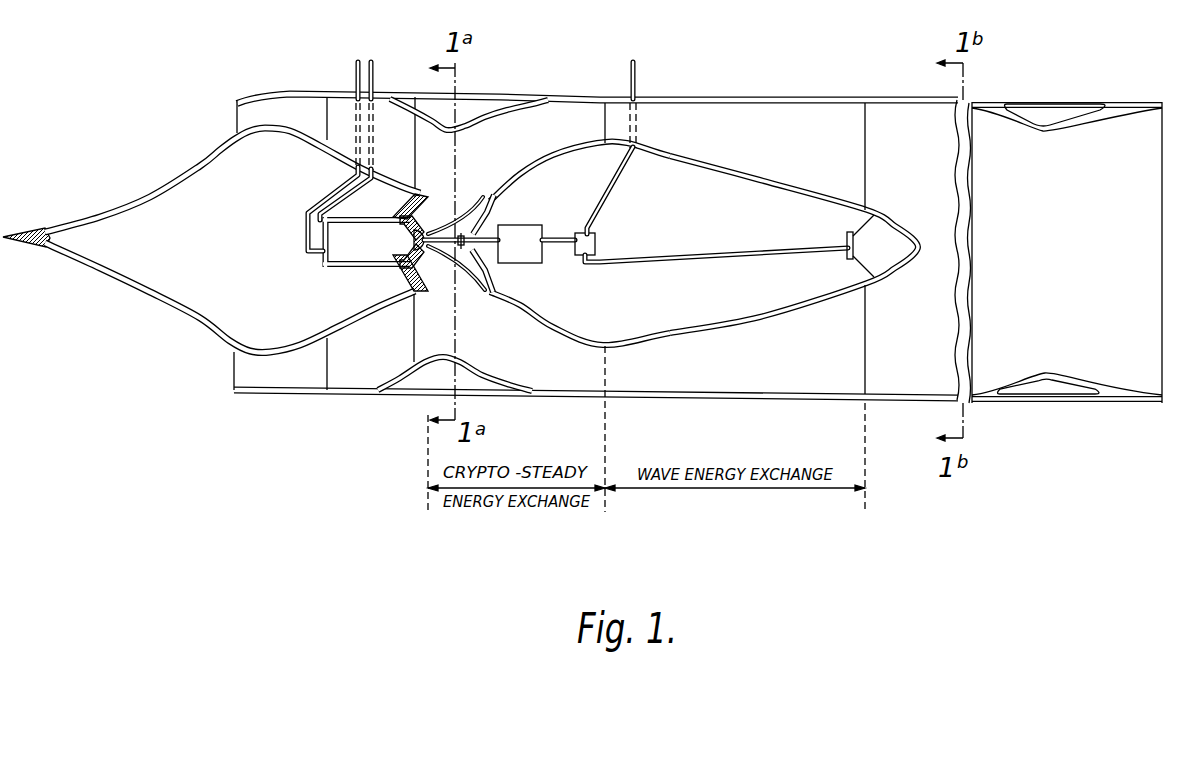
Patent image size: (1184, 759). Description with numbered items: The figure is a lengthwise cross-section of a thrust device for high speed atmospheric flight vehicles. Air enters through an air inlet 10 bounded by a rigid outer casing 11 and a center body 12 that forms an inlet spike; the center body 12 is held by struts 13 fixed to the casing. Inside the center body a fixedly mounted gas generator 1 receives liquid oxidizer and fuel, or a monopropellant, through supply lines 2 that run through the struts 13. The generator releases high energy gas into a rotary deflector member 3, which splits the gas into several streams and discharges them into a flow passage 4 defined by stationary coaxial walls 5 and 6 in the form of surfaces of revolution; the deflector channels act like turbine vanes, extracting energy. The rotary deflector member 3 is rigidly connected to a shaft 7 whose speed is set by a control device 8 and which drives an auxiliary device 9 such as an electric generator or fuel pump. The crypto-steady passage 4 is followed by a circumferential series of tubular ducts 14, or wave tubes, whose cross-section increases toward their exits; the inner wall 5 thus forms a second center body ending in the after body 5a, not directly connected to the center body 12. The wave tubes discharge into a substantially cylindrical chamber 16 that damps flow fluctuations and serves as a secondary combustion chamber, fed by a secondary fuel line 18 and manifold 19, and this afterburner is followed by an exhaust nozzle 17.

The gas generator 1 is at (353, 265).
The supply lines 2 is at (368, 77).
The rotary deflector member 3 is at (466, 292).
The flow passage 4 is at (534, 128).
The inner wall 5 is at (578, 141).
The after body 5a is at (795, 187).
The outer wall 6 is at (497, 102).
The shaft 7 is at (447, 290).
The control device 8 is at (533, 262).
The auxiliary device 9 is at (580, 256).
The air inlet 10 is at (248, 380).
The outer casing 11 is at (400, 393).
The center body 12 is at (175, 310).
The struts 13 is at (340, 372).
The tubular ducts 14 is at (712, 373).
The chamber 16 is at (913, 372).
The exhaust nozzle 17 is at (1053, 380).
The secondary fuel line 18 is at (630, 63).
The manifold 19 is at (852, 262).